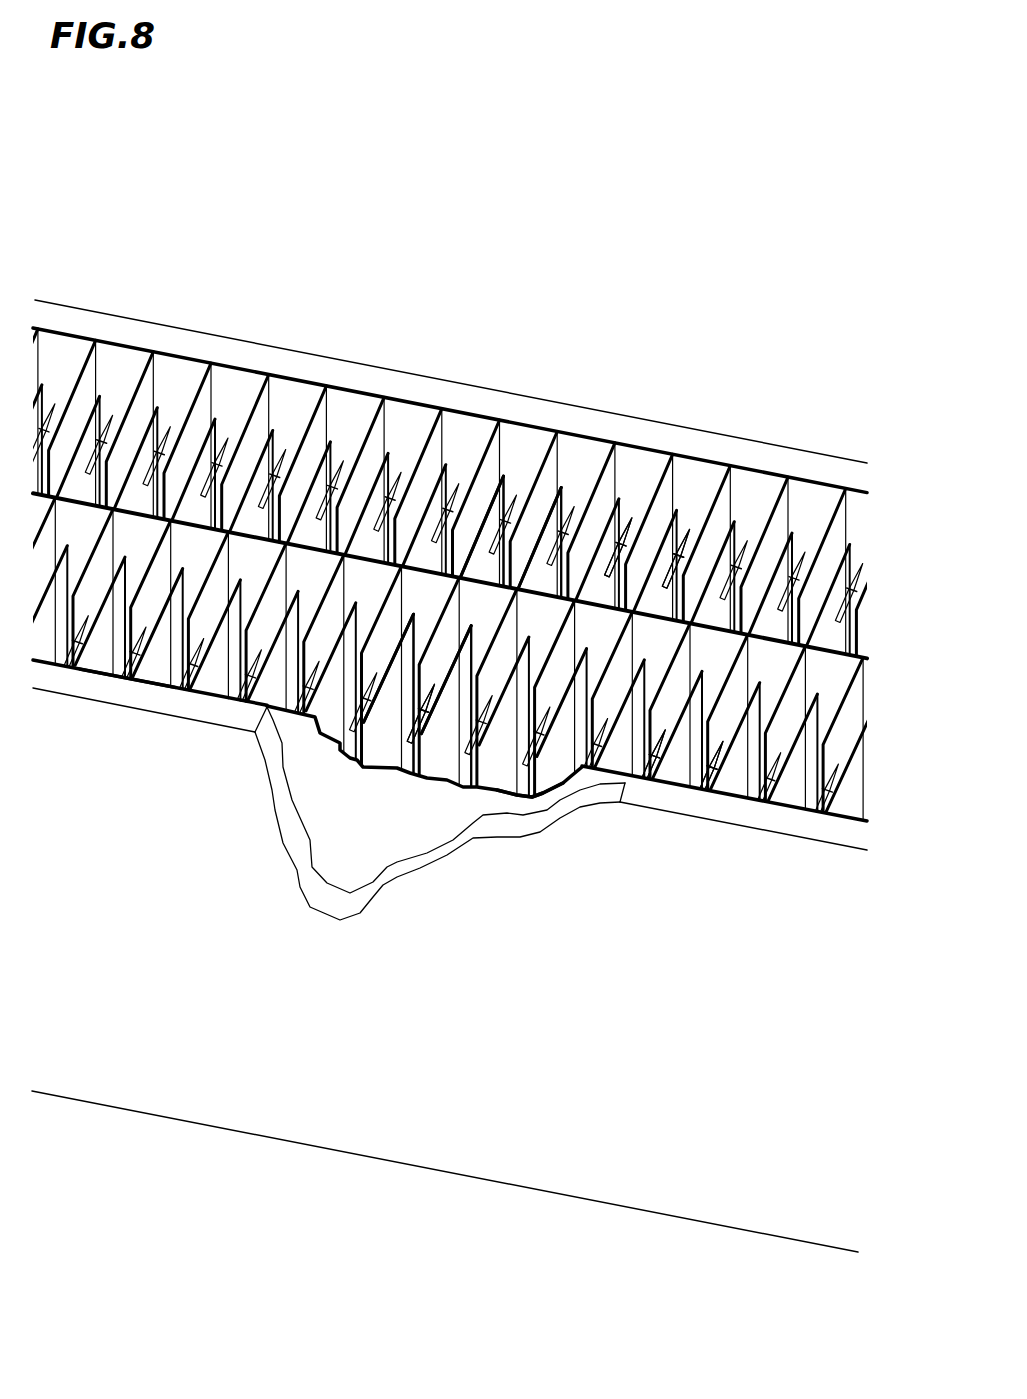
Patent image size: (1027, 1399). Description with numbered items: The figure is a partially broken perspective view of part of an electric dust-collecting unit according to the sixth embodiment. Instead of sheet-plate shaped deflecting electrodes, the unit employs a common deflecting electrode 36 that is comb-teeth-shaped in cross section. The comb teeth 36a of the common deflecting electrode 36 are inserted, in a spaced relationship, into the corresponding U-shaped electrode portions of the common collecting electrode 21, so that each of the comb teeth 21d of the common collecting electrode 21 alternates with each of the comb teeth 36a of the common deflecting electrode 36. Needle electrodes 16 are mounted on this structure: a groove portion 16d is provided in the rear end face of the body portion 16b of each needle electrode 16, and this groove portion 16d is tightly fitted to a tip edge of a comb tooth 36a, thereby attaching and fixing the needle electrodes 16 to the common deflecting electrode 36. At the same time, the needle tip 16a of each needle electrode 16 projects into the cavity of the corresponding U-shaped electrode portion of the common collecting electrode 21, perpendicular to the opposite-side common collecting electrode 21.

The common deflecting electrode 36 is at (200, 441).
The comb teeth of the common deflecting electrode 36a is at (493, 505).
The needle electrode 16 is at (284, 450).
The needle tip 16a is at (458, 741).
The body portion 16b is at (668, 763).
The groove portion 16d is at (680, 555).
The common collecting electrode 21 is at (330, 792).
The comb teeth of the common collecting electrode 21d is at (162, 663).